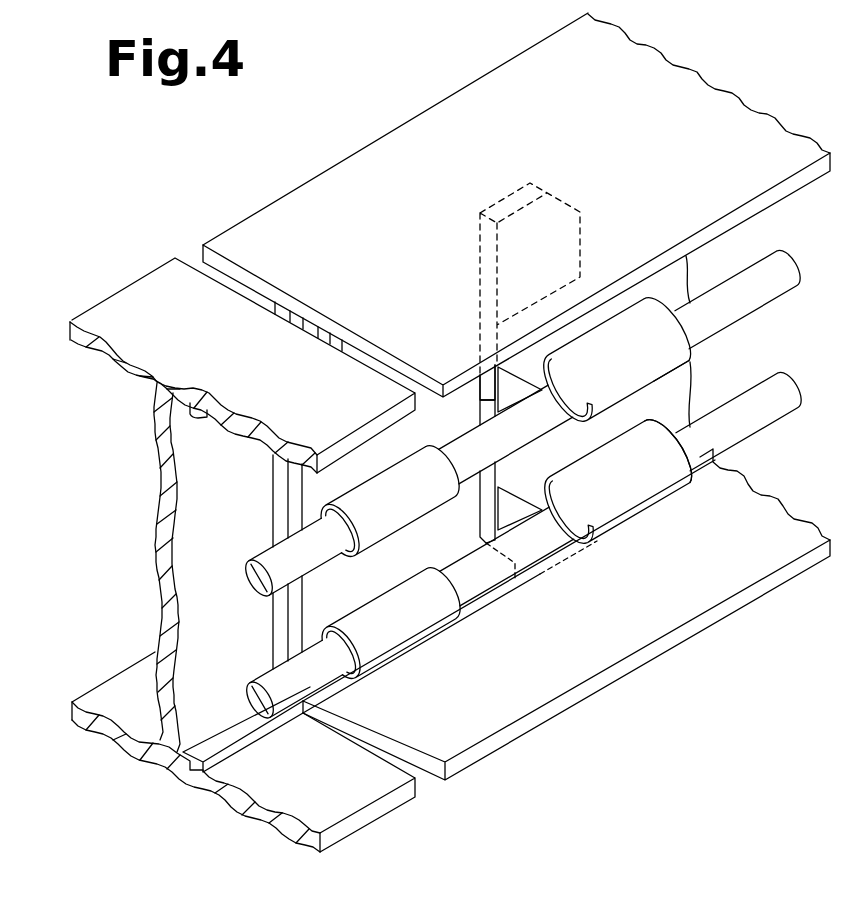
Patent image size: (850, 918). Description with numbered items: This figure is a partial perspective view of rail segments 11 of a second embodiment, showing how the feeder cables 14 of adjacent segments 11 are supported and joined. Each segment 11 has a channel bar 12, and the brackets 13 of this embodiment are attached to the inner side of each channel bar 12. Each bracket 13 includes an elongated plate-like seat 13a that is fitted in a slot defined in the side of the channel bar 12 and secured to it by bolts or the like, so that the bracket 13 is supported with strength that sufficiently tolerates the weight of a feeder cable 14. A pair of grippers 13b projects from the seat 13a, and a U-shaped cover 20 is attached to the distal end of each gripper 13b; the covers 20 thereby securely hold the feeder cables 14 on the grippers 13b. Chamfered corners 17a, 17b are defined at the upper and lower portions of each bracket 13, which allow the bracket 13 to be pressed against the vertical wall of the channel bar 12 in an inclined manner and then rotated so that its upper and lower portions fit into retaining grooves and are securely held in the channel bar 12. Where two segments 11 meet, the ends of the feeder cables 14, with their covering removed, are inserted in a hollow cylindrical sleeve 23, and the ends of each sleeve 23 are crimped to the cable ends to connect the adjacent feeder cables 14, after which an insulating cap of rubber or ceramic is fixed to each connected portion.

The segment 11 is at (414, 824).
The channel bar 12 is at (138, 298).
The bracket 13 is at (503, 507).
The seat 13a is at (507, 393).
The gripper 13b is at (604, 297).
The feeder cable 14 is at (737, 407).
The chamfered corner 17a is at (569, 204).
The chamfered corner 17b is at (519, 578).
The cover 20 is at (674, 447).
The sleeve 23 is at (417, 581).